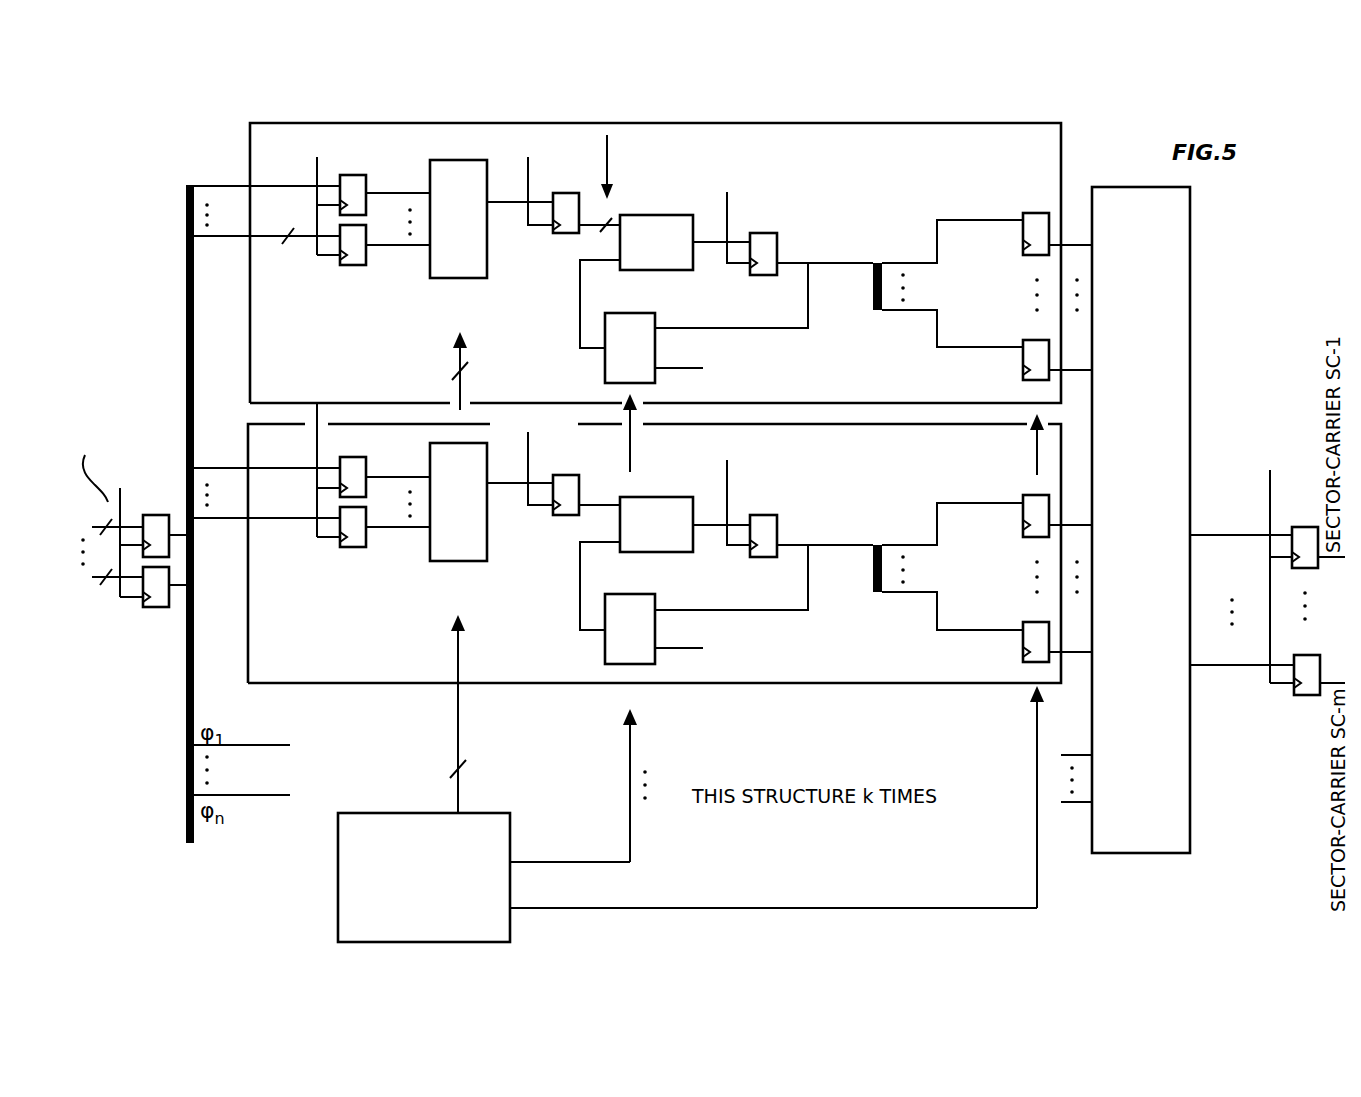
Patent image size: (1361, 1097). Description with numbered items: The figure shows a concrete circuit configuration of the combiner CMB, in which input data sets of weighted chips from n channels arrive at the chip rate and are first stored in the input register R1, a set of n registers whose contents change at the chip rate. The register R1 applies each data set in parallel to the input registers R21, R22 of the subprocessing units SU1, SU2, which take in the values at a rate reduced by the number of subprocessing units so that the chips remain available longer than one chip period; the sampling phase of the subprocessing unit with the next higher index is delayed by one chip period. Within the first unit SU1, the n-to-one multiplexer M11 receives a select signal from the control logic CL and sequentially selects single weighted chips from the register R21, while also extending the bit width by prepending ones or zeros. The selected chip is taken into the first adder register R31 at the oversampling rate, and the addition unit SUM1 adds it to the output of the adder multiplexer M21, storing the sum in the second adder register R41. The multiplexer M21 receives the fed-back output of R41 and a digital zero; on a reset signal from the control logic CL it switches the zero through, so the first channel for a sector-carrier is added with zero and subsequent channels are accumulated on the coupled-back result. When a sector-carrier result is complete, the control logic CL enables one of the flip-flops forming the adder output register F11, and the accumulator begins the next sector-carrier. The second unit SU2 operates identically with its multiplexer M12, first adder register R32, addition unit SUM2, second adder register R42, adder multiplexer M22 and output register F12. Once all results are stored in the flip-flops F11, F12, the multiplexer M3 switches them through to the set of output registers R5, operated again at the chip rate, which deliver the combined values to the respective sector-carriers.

The input register R1 is at (127, 532).
The input register of first subprocessing unit R21 is at (354, 238).
The input register of second subprocessing unit R22 is at (354, 521).
The n-to-1 multiplexer of first subprocessing unit M11 is at (458, 237).
The n-to-1 multiplexer of second subprocessing unit M12 is at (458, 519).
The first adder register R31 is at (559, 229).
The first adder register of second subprocessing unit R32 is at (559, 512).
The addition unit SUM1 is at (656, 242).
The addition unit of second subprocessing unit SUM2 is at (656, 524).
The second adder register R41 is at (767, 270).
The second adder register of second subprocessing unit R42 is at (767, 552).
The adder multiplexer M21 is at (605, 354).
The adder multiplexer of second subprocessing unit M22 is at (605, 635).
The adder output register F11 is at (1019, 303).
The adder output register of second subprocessing unit F12 is at (1018, 586).
The first subprocessing unit SU1 is at (1061, 150).
The second subprocessing unit SU2 is at (248, 650).
The control logic CL is at (338, 884).
The output multiplexer M3 is at (1115, 855).
The combiner CMB is at (1300, 257).
The output register R5 is at (1283, 583).